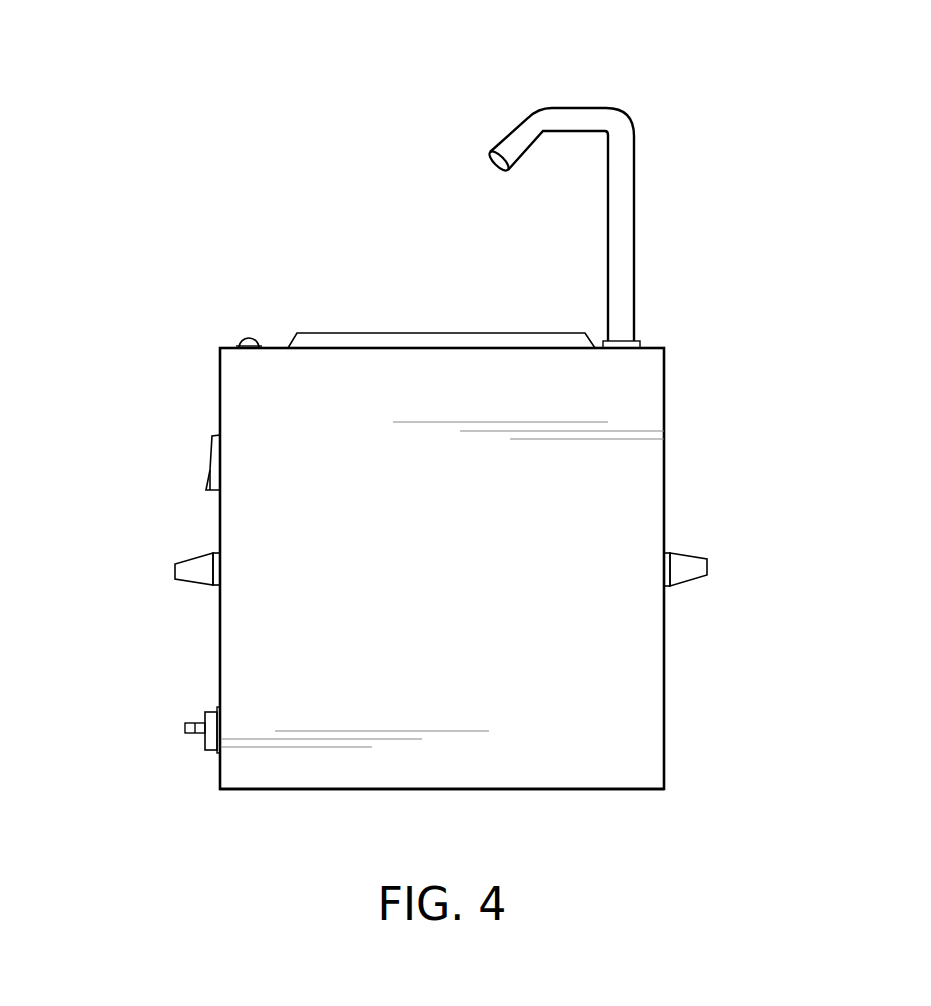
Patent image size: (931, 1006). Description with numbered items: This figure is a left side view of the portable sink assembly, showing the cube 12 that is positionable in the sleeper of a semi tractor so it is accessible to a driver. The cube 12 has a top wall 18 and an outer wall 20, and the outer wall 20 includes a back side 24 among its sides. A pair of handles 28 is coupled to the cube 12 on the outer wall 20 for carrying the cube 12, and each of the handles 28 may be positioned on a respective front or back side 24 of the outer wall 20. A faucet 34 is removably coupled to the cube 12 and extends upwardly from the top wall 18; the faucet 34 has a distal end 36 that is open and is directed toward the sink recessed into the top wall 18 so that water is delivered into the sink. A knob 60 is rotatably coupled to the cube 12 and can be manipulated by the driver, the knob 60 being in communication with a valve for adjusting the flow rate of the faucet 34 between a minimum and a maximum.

The cube 12 is at (221, 347).
The top wall 18 is at (276, 348).
The outer wall 20 is at (298, 757).
The back side 24 is at (220, 526).
The handles 28 is at (176, 567).
The faucet 34 is at (563, 110).
The distal end 36 is at (490, 165).
The knob 60 is at (208, 738).